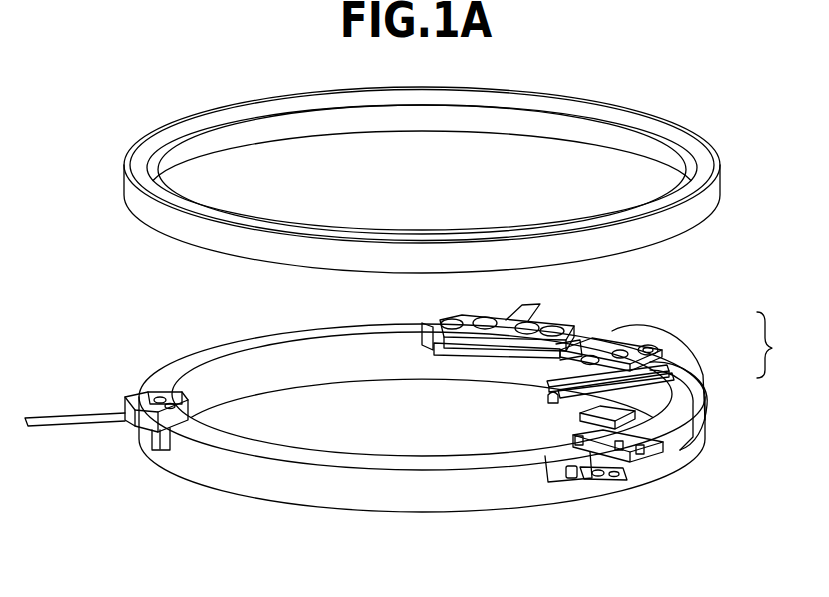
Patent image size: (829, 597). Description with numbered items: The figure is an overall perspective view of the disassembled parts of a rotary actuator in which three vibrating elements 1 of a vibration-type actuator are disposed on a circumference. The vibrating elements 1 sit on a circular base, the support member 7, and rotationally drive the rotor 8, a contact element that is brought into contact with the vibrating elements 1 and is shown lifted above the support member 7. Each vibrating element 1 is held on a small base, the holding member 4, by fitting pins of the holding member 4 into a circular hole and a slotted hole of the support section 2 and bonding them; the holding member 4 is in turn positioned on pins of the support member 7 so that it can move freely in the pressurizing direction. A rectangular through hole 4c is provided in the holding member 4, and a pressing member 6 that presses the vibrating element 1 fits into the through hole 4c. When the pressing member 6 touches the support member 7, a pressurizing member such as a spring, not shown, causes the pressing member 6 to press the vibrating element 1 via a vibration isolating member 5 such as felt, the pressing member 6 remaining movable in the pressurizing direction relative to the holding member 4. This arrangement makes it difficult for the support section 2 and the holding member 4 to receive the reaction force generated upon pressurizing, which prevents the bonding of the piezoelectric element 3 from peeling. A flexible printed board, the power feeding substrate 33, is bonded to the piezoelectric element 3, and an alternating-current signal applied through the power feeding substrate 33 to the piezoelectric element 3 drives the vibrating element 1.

The vibrating element 1 is at (136, 393).
The support section 2 is at (607, 340).
The piezoelectric element 3 is at (680, 362).
The holding member 4 is at (690, 412).
The through hole 4c is at (553, 382).
The vibration isolating member 5 is at (690, 444).
The pressing member 6 is at (648, 470).
The support member 7 is at (512, 497).
The rotor 8 is at (703, 162).
The power feeding substrate 33 is at (704, 400).